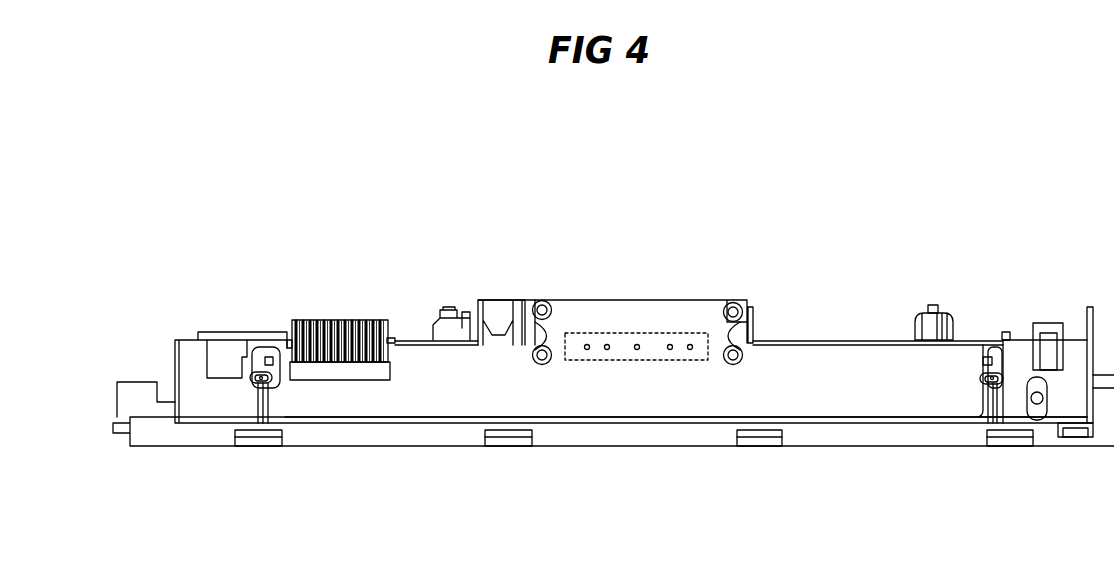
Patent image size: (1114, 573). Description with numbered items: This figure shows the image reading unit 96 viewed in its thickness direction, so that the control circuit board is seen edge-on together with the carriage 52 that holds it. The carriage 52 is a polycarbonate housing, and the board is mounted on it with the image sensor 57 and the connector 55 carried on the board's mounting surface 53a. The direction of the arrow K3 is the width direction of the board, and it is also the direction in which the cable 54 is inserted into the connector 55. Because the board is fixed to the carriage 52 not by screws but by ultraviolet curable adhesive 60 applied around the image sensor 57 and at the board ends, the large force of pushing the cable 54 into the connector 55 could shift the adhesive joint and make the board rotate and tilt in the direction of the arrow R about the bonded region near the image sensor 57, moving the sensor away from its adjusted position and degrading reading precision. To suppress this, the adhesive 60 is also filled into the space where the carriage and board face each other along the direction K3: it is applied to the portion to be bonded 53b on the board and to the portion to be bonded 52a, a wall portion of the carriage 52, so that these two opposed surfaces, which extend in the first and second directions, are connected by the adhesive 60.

The carriage 52 is at (1028, 347).
The portion to be bonded 52a is at (251, 380).
The mounting surface 53a is at (875, 402).
The portion to be bonded 53b is at (278, 360).
The cable 54 is at (363, 330).
The connector 55 is at (353, 377).
The image sensor 57 is at (674, 333).
The adhesive 60 is at (262, 372).
The image reading unit 96 is at (636, 244).
The direction of the arrow K3 is at (338, 305).
The direction of the arrow R is at (508, 292).